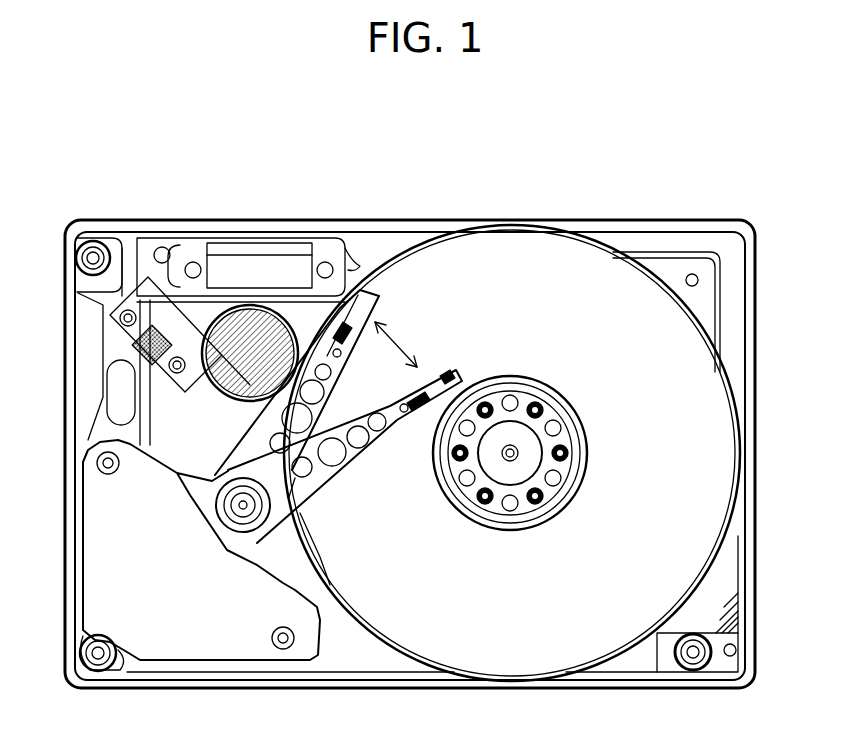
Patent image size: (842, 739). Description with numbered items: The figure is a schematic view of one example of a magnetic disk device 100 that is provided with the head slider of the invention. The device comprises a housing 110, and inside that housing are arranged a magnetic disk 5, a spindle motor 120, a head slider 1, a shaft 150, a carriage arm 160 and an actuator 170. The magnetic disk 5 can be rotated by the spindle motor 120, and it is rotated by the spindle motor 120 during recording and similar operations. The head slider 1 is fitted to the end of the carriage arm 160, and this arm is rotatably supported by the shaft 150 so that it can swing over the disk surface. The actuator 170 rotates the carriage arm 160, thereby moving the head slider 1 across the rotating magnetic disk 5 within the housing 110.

The magnetic disk device 100 is at (374, 218).
The housing 110 is at (578, 216).
The head slider 1 is at (440, 368).
The magnetic disk 5 is at (595, 360).
The spindle motor 120 is at (527, 467).
The shaft 150 is at (244, 486).
The carriage arm 160 is at (345, 465).
The actuator 170 is at (171, 590).